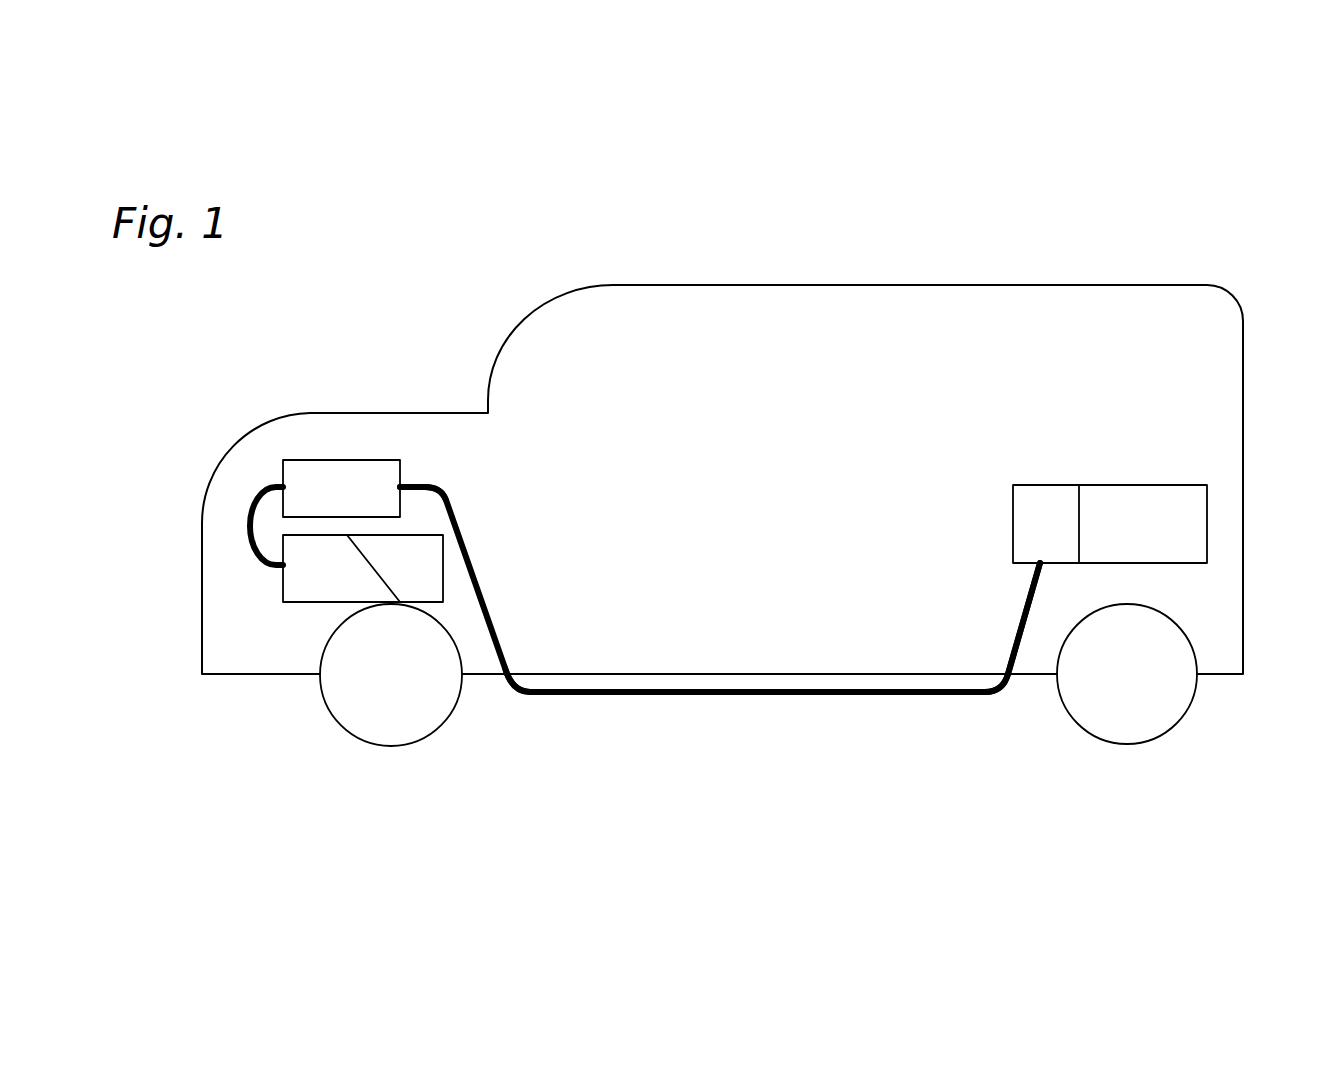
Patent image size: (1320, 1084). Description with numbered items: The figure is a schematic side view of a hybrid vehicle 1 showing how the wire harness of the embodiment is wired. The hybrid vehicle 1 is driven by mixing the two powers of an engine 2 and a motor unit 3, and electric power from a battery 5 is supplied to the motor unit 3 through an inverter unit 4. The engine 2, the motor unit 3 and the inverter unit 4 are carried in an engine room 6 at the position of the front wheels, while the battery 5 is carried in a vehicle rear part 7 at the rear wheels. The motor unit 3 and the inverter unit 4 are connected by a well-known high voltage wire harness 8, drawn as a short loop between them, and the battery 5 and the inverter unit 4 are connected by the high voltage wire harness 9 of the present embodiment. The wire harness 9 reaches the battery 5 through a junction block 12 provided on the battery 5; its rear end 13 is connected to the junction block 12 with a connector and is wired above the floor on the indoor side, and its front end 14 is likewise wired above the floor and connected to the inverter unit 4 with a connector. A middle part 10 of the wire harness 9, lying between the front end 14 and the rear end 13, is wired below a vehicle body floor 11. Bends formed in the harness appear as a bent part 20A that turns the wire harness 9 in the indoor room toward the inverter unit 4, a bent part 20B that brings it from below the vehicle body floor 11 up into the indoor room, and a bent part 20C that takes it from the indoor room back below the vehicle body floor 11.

The hybrid vehicle 1 is at (398, 298).
The engine 2 is at (418, 590).
The motor unit 3 is at (310, 587).
The inverter unit 4 is at (332, 480).
The battery 5 is at (1150, 515).
The engine room 6 is at (230, 628).
The vehicle rear part 7 is at (1218, 598).
The high voltage wire harness 8 is at (255, 520).
The high voltage wire harness 9 is at (715, 697).
The middle part 10 is at (772, 695).
The vehicle body floor 11 is at (872, 677).
The junction block 12 is at (1047, 515).
The rear end 13 is at (1031, 580).
The front end 14 is at (427, 480).
The bent part 20A is at (455, 488).
The bent part 20B is at (526, 670).
The bent part 20C is at (983, 668).